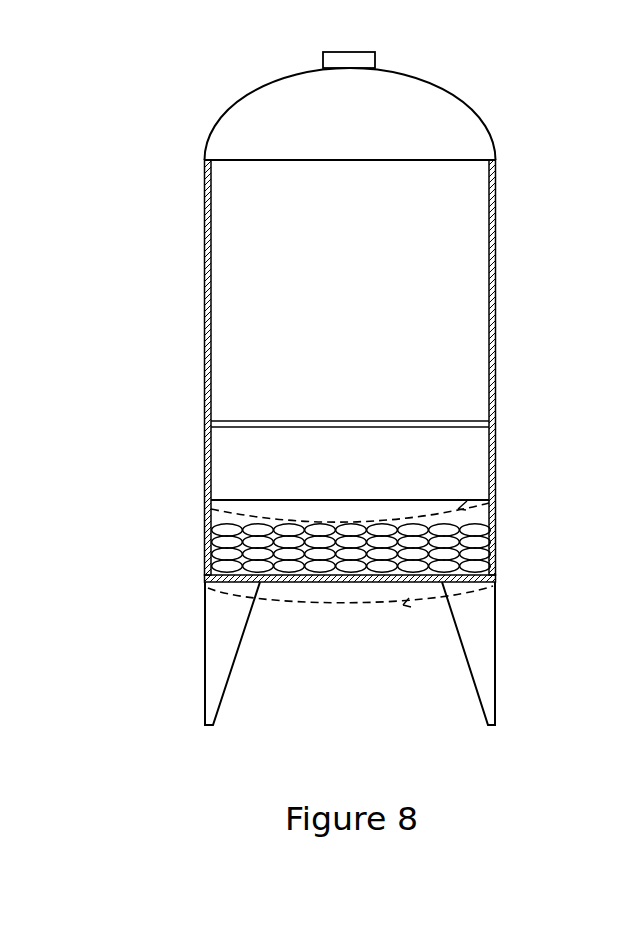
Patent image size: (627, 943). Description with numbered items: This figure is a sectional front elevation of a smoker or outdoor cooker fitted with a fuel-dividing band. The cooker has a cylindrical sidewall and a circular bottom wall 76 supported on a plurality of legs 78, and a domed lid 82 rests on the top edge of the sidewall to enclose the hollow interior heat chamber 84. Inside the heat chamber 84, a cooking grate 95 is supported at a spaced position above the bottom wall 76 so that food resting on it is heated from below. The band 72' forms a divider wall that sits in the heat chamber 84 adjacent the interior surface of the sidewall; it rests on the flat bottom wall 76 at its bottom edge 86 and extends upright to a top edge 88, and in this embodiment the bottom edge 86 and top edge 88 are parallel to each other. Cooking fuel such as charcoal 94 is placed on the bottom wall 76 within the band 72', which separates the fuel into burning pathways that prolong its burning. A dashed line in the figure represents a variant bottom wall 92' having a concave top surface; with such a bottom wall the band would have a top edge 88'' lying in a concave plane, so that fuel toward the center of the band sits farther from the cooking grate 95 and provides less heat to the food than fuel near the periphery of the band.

The lid 82 is at (460, 120).
The heat chamber 84 is at (467, 213).
The cooking grate 95 is at (255, 421).
The top edge of the band 88 is at (322, 458).
The band 72' is at (428, 458).
The top edge of the band 88'' is at (385, 490).
The charcoal 94 is at (222, 520).
The bottom wall 76 is at (489, 568).
The bottom edge of the band 86 is at (290, 583).
The legs 78 is at (228, 647).
The bottom wall 92' is at (399, 623).